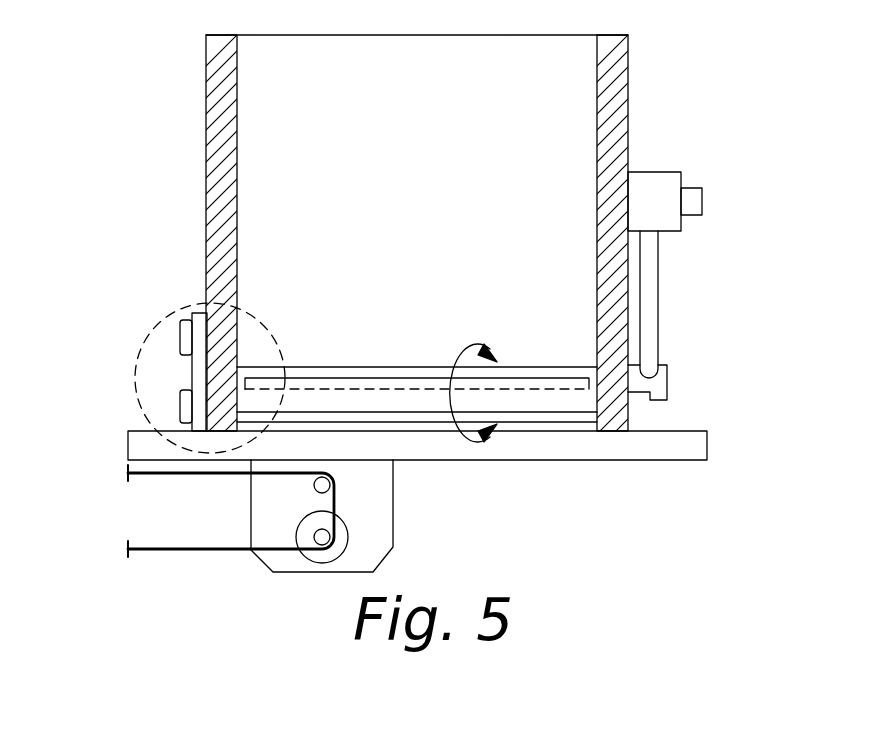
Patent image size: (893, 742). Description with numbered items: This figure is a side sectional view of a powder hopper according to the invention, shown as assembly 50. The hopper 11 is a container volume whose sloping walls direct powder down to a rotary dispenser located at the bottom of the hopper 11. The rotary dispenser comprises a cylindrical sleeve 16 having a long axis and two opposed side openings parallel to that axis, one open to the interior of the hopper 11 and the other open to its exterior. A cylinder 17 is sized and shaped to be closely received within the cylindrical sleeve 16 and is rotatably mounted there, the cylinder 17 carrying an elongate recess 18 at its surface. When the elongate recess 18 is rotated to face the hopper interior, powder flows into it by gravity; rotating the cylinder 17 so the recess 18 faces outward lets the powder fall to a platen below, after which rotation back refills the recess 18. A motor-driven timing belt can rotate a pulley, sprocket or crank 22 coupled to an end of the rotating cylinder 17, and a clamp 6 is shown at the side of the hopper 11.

The cassette holding assembly 50 is at (122, 161).
The clamp 6 is at (145, 340).
The hopper 11 is at (618, 83).
The crank 22 is at (650, 262).
The cylindrical sleeve 16 is at (643, 374).
The cylinder 17 is at (513, 412).
The elongate recess 18 is at (373, 387).